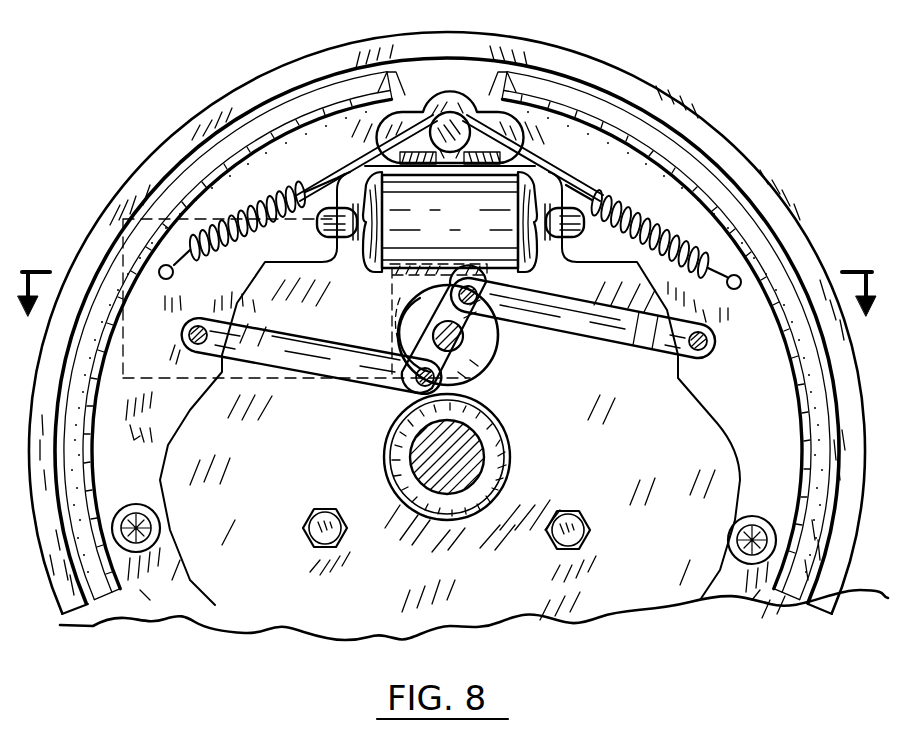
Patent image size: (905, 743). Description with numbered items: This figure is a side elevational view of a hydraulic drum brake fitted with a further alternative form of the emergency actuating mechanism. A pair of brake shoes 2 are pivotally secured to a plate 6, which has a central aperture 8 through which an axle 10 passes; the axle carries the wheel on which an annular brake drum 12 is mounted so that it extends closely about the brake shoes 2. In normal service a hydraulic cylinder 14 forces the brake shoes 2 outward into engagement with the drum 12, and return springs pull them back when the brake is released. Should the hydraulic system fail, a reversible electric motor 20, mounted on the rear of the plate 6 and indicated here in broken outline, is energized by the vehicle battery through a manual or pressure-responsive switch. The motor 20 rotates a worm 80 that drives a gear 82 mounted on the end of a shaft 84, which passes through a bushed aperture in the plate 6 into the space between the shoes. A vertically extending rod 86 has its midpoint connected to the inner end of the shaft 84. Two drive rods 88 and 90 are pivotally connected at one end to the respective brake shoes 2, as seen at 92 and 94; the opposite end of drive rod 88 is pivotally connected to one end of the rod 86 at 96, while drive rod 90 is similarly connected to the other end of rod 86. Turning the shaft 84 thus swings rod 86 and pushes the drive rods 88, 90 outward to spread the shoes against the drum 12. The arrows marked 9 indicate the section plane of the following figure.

The brake shoes 2 is at (208, 156).
The plate 6 is at (376, 609).
The central aperture 8 is at (500, 470).
The section line of FIG. 9 is at (445, 309).
The axle 10 is at (410, 498).
The brake drum 12 is at (462, 33).
The hydraulic cylinder 14 is at (478, 213).
The reversible electric motor 20 is at (292, 380).
The worm 80 is at (442, 262).
The gear 82 is at (482, 379).
The shaft 84 is at (398, 330).
The vertically extending rod 86 is at (494, 346).
The drive rod 88 is at (301, 317).
The drive rod 90 is at (593, 340).
The pivotal connection 92 is at (190, 342).
The pivotal connection 94 is at (712, 345).
The pivotal connection 96 is at (412, 386).